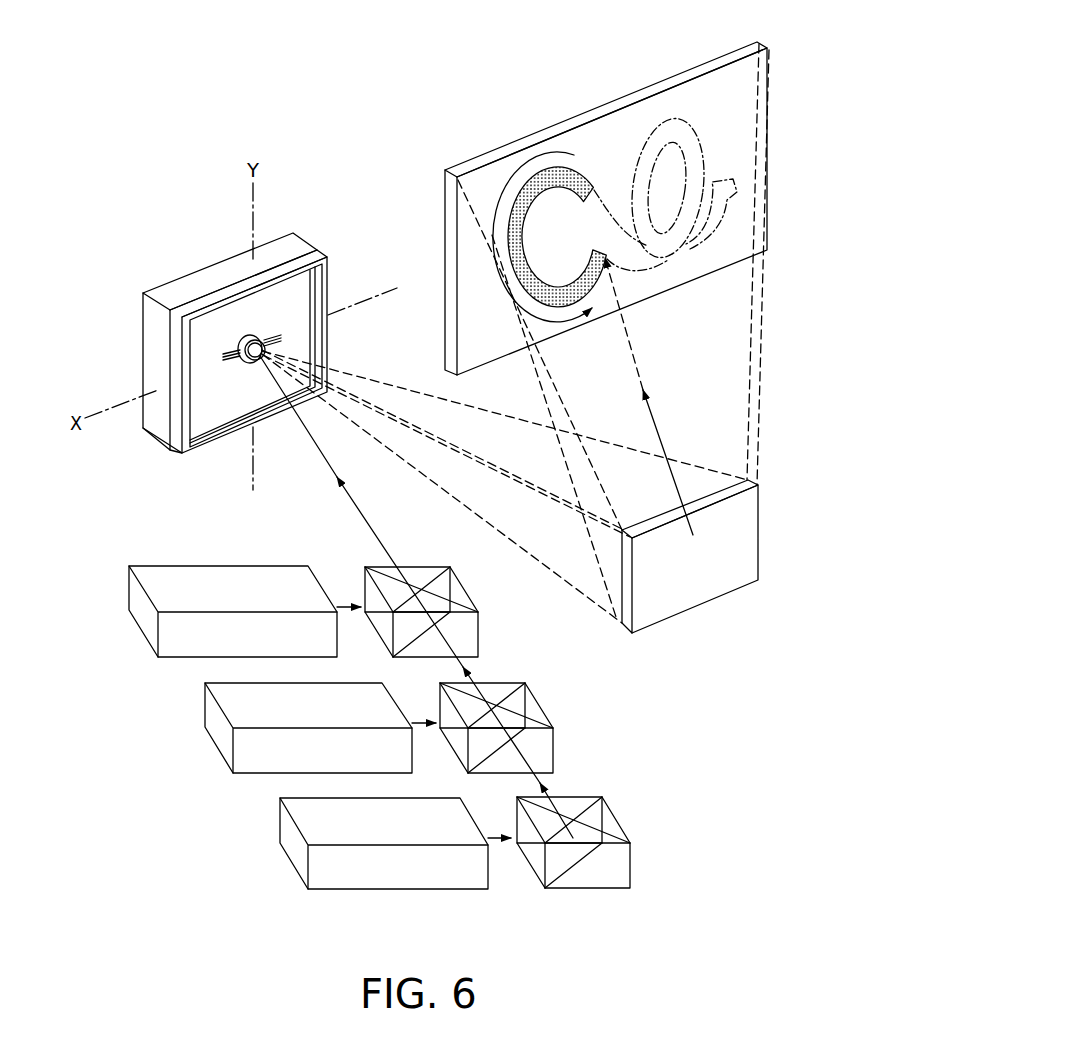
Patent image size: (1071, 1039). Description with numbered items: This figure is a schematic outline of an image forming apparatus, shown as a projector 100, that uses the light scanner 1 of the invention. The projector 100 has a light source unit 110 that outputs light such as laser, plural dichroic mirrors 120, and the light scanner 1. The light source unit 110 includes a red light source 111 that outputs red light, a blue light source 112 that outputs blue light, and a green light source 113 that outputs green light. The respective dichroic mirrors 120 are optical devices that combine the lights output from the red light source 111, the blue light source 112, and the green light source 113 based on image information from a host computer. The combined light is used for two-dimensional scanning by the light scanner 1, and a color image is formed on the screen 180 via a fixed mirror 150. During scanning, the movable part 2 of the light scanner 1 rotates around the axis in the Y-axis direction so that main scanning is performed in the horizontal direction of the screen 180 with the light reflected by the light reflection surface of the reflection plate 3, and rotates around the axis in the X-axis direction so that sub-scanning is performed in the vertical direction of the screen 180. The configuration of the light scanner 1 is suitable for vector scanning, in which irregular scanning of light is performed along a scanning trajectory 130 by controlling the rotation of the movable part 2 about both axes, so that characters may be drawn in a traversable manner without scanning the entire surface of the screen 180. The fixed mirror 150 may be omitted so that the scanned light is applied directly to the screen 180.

The light scanner 1 is at (140, 336).
The movable part 2 is at (233, 347).
The reflection plate 3 is at (267, 337).
The projector 100 is at (131, 199).
The light source unit 110 is at (273, 727).
The red light source 111 is at (342, 843).
The blue light source 112 is at (245, 707).
The green light source 113 is at (170, 595).
The dichroic mirrors 120 is at (468, 588).
The scanning trajectory 130 is at (546, 153).
The fixed mirror 150 is at (749, 537).
The screen 180 is at (703, 67).